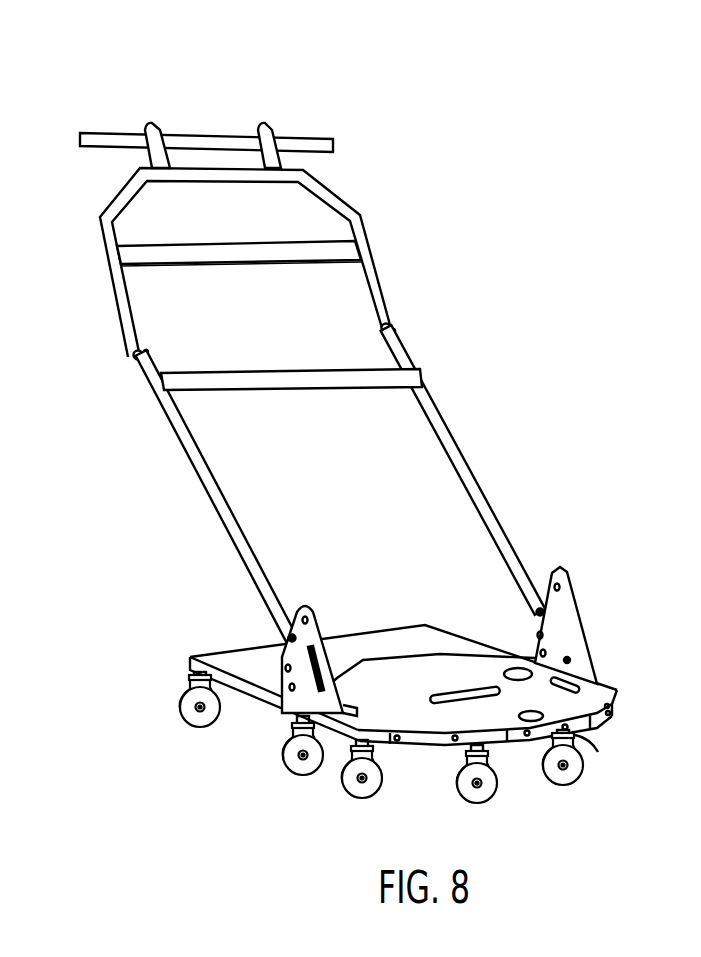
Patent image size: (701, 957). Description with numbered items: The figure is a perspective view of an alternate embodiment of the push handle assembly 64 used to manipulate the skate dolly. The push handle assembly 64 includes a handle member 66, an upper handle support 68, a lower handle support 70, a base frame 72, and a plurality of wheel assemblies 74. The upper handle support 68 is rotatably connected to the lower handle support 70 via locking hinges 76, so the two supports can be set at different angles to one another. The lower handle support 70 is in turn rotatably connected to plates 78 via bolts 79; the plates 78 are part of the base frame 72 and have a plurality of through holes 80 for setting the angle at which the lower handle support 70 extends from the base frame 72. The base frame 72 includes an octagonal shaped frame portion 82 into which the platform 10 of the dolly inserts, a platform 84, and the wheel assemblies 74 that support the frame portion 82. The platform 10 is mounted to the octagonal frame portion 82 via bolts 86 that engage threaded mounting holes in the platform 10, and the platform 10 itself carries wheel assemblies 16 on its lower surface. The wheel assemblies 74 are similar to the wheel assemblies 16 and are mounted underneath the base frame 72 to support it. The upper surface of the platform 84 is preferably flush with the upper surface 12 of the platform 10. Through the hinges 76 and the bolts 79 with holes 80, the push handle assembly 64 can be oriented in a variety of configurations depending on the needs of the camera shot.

The platform 10 is at (605, 680).
The upper surface 12 is at (400, 701).
The wheel assemblies 16 is at (452, 780).
The push handle assembly 64 is at (417, 218).
The handle member 66 is at (214, 136).
The upper handle support 68 is at (122, 302).
The lower handle support 70 is at (210, 502).
The base frame 72 is at (246, 633).
The wheel assemblies 74 is at (198, 728).
The locking hinges 76 is at (133, 356).
The plates 78 is at (323, 630).
The bolts 79 is at (311, 603).
The through holes 80 is at (557, 587).
The octagonal shaped frame portion 82 is at (508, 743).
The platform 84 is at (413, 656).
The bolts 86 is at (580, 740).